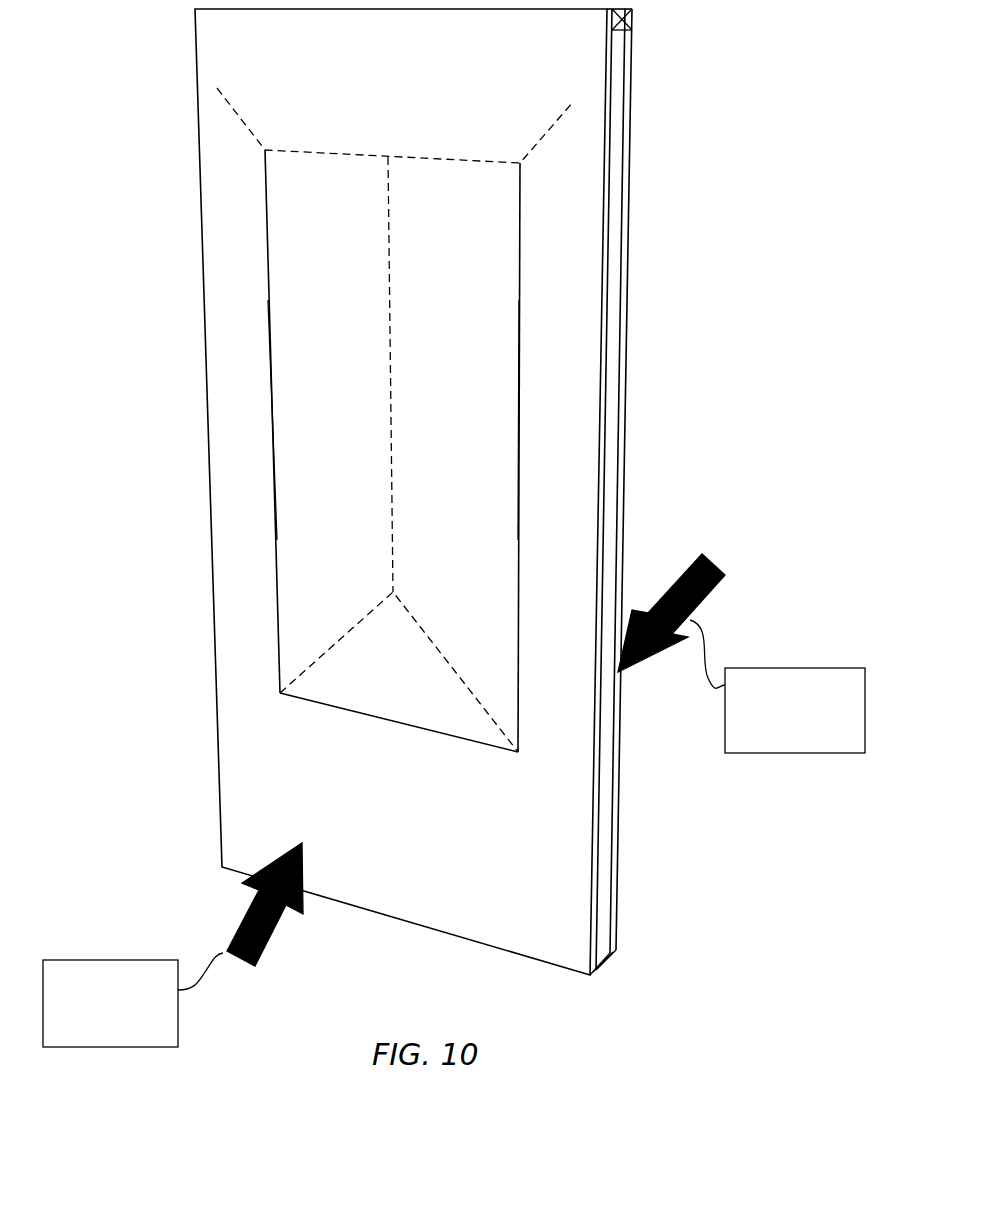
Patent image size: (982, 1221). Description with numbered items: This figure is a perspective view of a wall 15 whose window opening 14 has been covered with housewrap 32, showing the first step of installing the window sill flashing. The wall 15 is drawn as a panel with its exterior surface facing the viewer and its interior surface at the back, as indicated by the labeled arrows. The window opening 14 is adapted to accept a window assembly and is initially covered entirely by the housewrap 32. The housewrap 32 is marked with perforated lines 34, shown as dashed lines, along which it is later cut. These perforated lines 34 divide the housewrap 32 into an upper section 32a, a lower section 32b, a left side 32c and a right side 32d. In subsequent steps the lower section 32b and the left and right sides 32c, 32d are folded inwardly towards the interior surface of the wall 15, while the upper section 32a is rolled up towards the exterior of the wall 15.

The window opening 14 is at (465, 362).
The wall 15 is at (610, 895).
The housewrap 32 is at (340, 420).
The upper section 32a is at (393, 128).
The lower section 32b is at (393, 684).
The left side 32c is at (344, 504).
The right side 32d is at (454, 504).
The perforated lines 34 is at (392, 340).